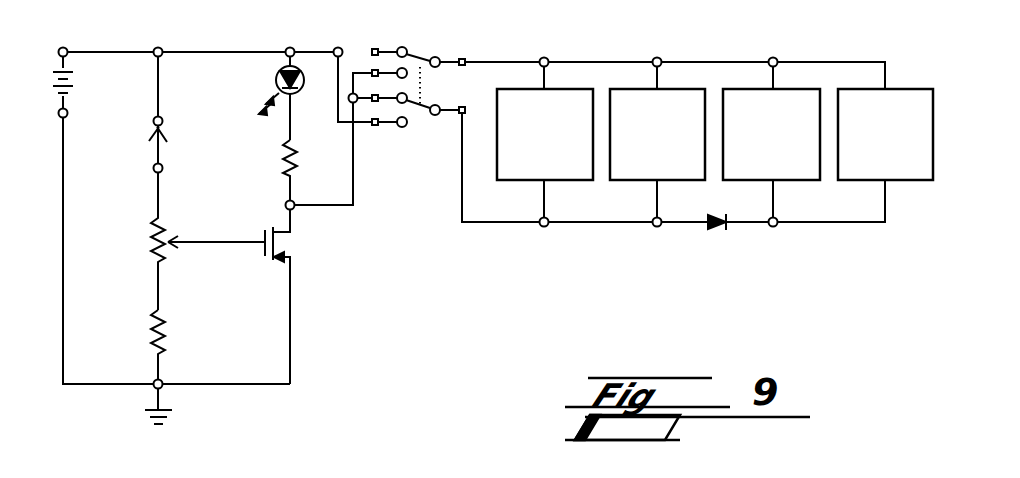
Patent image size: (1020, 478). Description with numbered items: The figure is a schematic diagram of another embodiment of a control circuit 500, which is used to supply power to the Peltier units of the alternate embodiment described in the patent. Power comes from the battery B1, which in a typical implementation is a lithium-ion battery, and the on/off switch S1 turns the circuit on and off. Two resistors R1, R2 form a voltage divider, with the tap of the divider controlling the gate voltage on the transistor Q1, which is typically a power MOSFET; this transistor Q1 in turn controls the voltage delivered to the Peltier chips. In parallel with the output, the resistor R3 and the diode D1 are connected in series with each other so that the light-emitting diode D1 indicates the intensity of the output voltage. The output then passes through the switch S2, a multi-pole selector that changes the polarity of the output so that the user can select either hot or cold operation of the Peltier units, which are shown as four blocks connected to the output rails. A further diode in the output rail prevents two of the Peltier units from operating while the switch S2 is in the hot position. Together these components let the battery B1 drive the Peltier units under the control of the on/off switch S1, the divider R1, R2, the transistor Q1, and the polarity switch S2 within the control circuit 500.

The battery B1 is at (78, 82).
The on/off switch S1 is at (174, 109).
The resistor R2 is at (208, 241).
The resistor R1 is at (172, 345).
The diode D1 is at (294, 98).
The resistor R3 is at (305, 167).
The power MOSFET Q1 is at (263, 296).
The switch S2 is at (418, 87).
The control circuit 500 is at (413, 268).